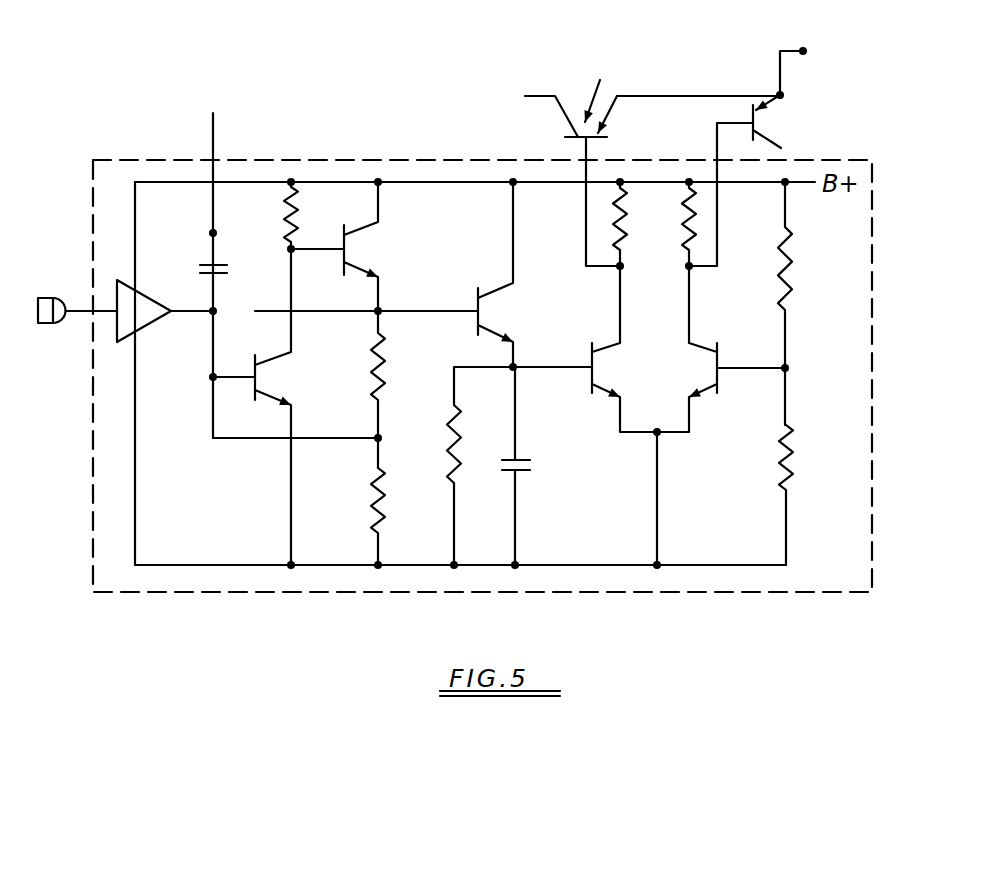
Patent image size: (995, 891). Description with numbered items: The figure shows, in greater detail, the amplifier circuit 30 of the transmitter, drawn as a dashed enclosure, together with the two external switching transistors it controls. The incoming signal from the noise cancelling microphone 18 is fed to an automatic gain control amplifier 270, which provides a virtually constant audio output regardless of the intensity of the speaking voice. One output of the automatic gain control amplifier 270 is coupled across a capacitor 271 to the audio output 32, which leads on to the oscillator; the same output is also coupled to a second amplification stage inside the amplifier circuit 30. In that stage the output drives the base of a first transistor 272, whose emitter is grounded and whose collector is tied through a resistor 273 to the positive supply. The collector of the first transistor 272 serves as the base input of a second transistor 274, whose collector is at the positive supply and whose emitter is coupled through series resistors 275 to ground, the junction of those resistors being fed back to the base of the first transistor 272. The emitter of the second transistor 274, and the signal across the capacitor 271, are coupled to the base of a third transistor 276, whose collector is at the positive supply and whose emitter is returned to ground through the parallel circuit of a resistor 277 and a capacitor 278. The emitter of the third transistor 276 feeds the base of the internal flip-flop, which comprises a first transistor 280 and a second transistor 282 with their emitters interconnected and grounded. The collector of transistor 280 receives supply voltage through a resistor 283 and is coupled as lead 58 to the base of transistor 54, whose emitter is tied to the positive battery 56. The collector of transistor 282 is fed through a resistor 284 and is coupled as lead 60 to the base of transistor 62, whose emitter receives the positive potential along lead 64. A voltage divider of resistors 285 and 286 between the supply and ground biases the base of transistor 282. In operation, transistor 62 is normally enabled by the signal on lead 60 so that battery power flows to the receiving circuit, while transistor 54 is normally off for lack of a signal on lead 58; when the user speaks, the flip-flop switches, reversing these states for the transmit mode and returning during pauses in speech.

The noise cancelling microphone 18 is at (46, 297).
The amplifier circuit 30 is at (134, 159).
The audio output 32 is at (212, 150).
The transistor 54 is at (602, 84).
The battery 56 is at (804, 49).
The lead 58 is at (584, 152).
The lead 60 is at (717, 140).
The transistor 62 is at (766, 126).
The lead 64 is at (770, 103).
The automatic gain control amplifier 270 is at (158, 326).
The capacitor 271 is at (199, 269).
The first transistor 272 is at (265, 378).
The resistor 273 is at (288, 213).
The second transistor 274 is at (355, 248).
The resistors 275 is at (384, 371).
The third transistor 276 is at (497, 316).
The resistor 277 is at (453, 458).
The capacitor 278 is at (535, 463).
The first transistor 280 is at (600, 369).
The second transistor 282 is at (708, 365).
The resistor 283 is at (647, 224).
The resistor 284 is at (685, 215).
The resistor 285 is at (784, 262).
The resistor 286 is at (775, 440).